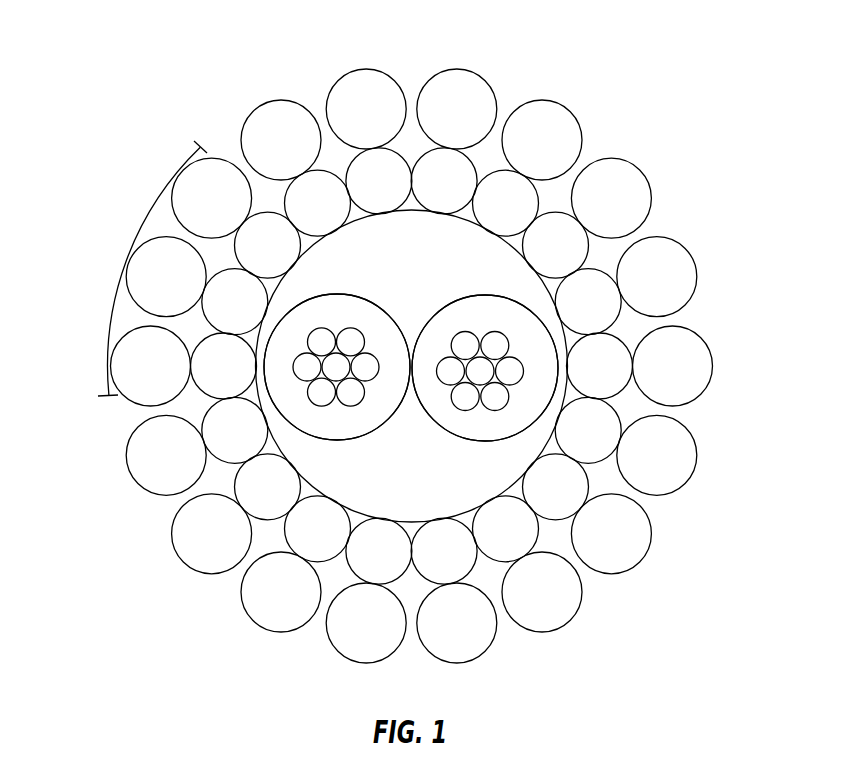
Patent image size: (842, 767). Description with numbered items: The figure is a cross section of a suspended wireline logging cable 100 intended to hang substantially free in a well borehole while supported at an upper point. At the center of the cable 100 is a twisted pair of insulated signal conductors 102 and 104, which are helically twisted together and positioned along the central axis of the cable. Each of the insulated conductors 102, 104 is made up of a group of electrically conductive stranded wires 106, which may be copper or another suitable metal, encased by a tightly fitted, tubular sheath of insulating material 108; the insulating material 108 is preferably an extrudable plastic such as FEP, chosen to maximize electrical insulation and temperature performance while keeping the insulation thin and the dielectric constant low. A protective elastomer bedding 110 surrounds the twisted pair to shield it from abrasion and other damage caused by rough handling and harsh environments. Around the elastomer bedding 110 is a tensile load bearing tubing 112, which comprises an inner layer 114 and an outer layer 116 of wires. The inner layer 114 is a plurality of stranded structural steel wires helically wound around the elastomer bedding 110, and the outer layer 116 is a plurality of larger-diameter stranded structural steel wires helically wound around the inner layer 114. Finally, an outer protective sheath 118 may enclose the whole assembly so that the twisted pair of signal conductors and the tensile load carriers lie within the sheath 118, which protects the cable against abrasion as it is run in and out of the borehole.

The suspended wireline logging cable 100 is at (158, 118).
The insulated signal conductor 102 is at (338, 294).
The insulated signal conductor 104 is at (486, 295).
The electrically conductive stranded wires 106 is at (316, 401).
The tubular sheath of insulating material 108 is at (337, 440).
The protective elastomer bedding 110 is at (412, 522).
The tensile load bearing tubing 112 is at (479, 61).
The inner layer of wires 114 is at (605, 268).
The outer layer of wires 116 is at (612, 158).
The outer protective sheath 118 is at (110, 316).